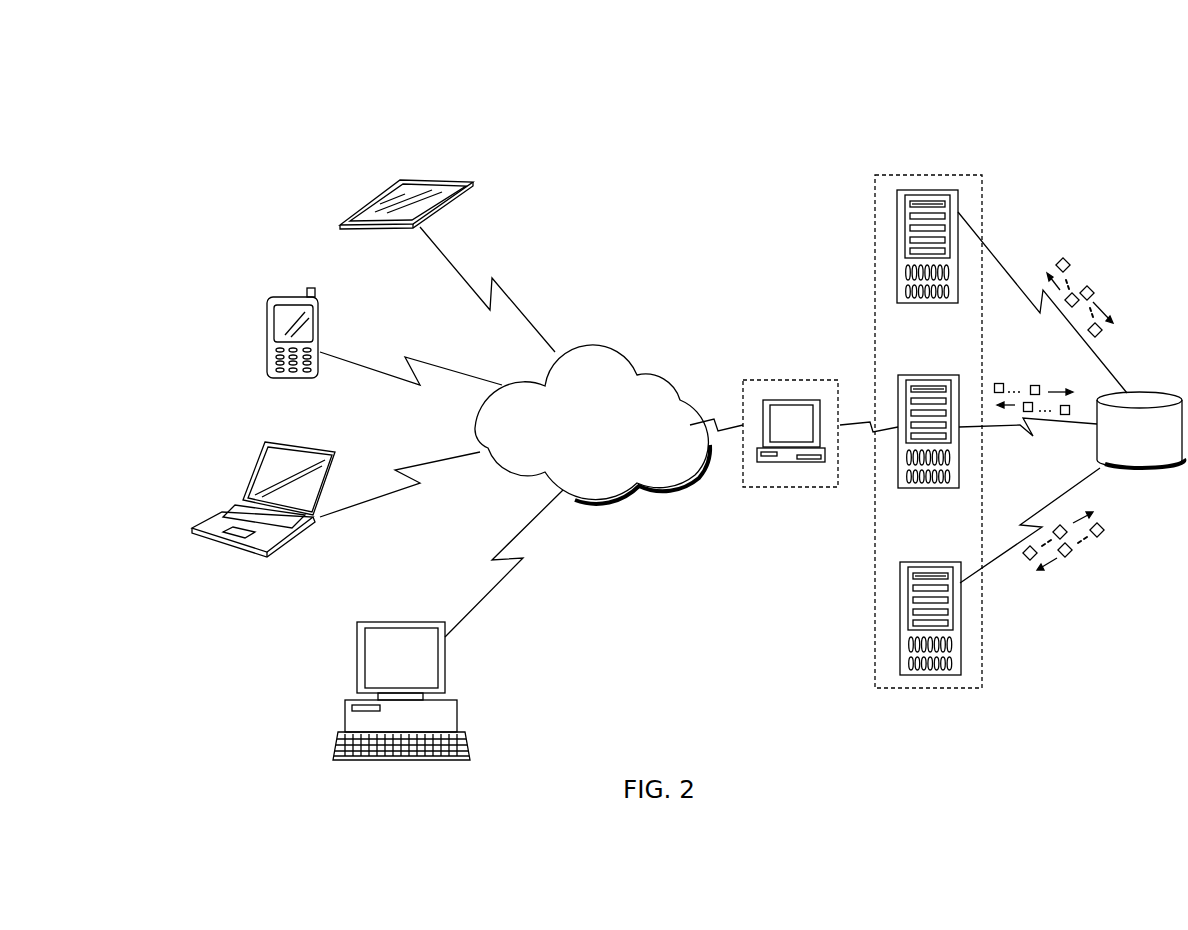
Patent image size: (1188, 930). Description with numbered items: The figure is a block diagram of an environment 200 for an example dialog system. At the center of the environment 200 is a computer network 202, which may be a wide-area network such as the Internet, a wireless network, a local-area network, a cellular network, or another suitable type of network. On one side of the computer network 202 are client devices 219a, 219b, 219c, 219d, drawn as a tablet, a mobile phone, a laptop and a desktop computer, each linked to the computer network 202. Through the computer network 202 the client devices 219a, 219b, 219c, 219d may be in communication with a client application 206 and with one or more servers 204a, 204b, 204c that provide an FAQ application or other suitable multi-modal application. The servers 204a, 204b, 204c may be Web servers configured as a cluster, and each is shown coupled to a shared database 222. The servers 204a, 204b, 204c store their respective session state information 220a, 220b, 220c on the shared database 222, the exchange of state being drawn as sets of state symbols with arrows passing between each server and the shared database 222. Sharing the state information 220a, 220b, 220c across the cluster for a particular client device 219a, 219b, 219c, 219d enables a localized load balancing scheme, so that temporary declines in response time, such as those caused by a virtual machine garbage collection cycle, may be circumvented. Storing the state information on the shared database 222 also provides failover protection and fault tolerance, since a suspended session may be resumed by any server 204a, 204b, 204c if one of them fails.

The environment 200 is at (260, 72).
The computer network 202 is at (611, 472).
The server 204a is at (942, 190).
The server 204b is at (943, 375).
The server 204c is at (943, 562).
The client application 206 is at (790, 380).
The client device 219a is at (413, 178).
The client device 219b is at (277, 297).
The client device 219c is at (217, 517).
The client device 219d is at (357, 655).
The session state information 220a is at (1148, 296).
The session state information 220b is at (1040, 377).
The session state information 220c is at (1132, 606).
The shared database 222 is at (1154, 447).